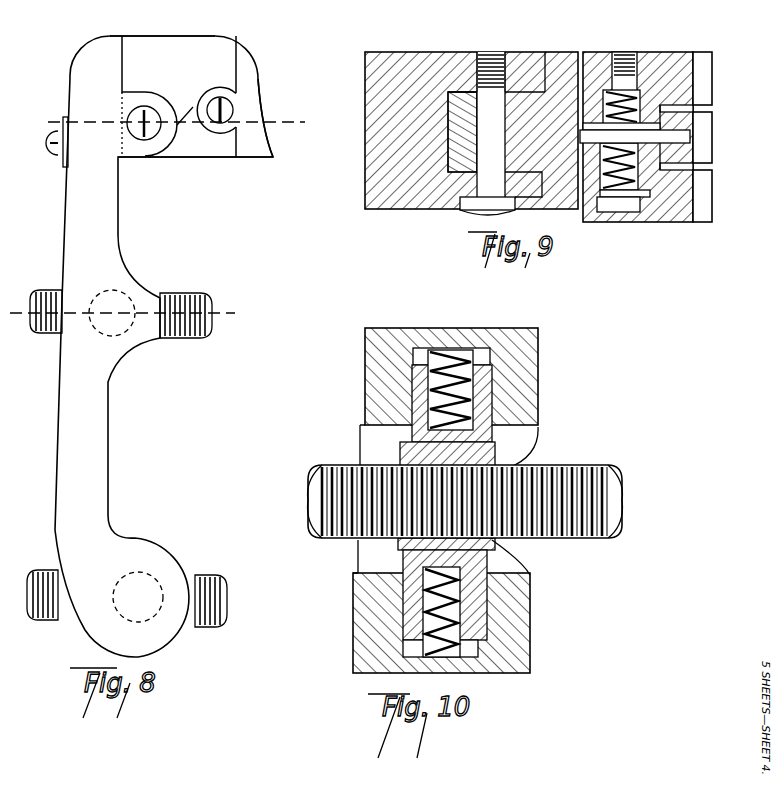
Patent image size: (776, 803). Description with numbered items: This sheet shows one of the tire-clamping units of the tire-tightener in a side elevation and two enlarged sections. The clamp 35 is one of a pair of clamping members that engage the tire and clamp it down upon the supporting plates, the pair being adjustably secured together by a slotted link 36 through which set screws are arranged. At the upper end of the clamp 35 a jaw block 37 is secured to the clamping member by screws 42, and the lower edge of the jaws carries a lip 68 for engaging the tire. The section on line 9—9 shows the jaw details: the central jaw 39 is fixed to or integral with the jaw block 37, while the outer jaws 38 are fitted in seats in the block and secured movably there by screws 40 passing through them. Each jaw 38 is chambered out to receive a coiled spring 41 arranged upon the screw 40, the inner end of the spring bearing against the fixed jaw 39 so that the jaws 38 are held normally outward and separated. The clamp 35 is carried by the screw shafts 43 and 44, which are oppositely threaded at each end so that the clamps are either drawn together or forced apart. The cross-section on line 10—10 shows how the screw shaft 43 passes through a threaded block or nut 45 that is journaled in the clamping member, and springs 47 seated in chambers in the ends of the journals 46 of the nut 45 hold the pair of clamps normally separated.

In FIG. 8, the clamp 35 is at (113, 206).
In FIG. 9, the clamp 35 is at (413, 52).
In FIG. 10, the clamp 35 is at (538, 353).
In FIG. 8, the link 36 is at (62, 160).
In FIG. 8, the jaw block 37 is at (200, 36).
In FIG. 9, the jaw block 37 is at (563, 52).
In FIG. 8, the jaw 38 is at (263, 106).
In FIG. 9, the jaw 38 is at (705, 52).
In FIG. 9, the central jaw 39 is at (690, 133).
In FIG. 8, the screw 40 is at (231, 114).
In FIG. 9, the screw 40 is at (640, 184).
In FIG. 9, the coiled spring 41 is at (632, 98).
In FIG. 8, the screw 42 is at (144, 140).
In FIG. 9, the screw 42 is at (500, 52).
In FIG. 8, the screw shaft 43 is at (190, 290).
In FIG. 10, the screw shaft 43 is at (613, 462).
In FIG. 8, the screw shaft 44 is at (215, 574).
In FIG. 10, the threaded block or nut 45 is at (500, 458).
In FIG. 10, the journal 46 is at (487, 398).
In FIG. 10, the spring 47 is at (470, 370).
In FIG. 8, the lip 68 is at (268, 160).
In FIG. 8, the section line 9— 9 is at (47, 93).
In FIG. 8, the section line 10— 10 is at (14, 288).